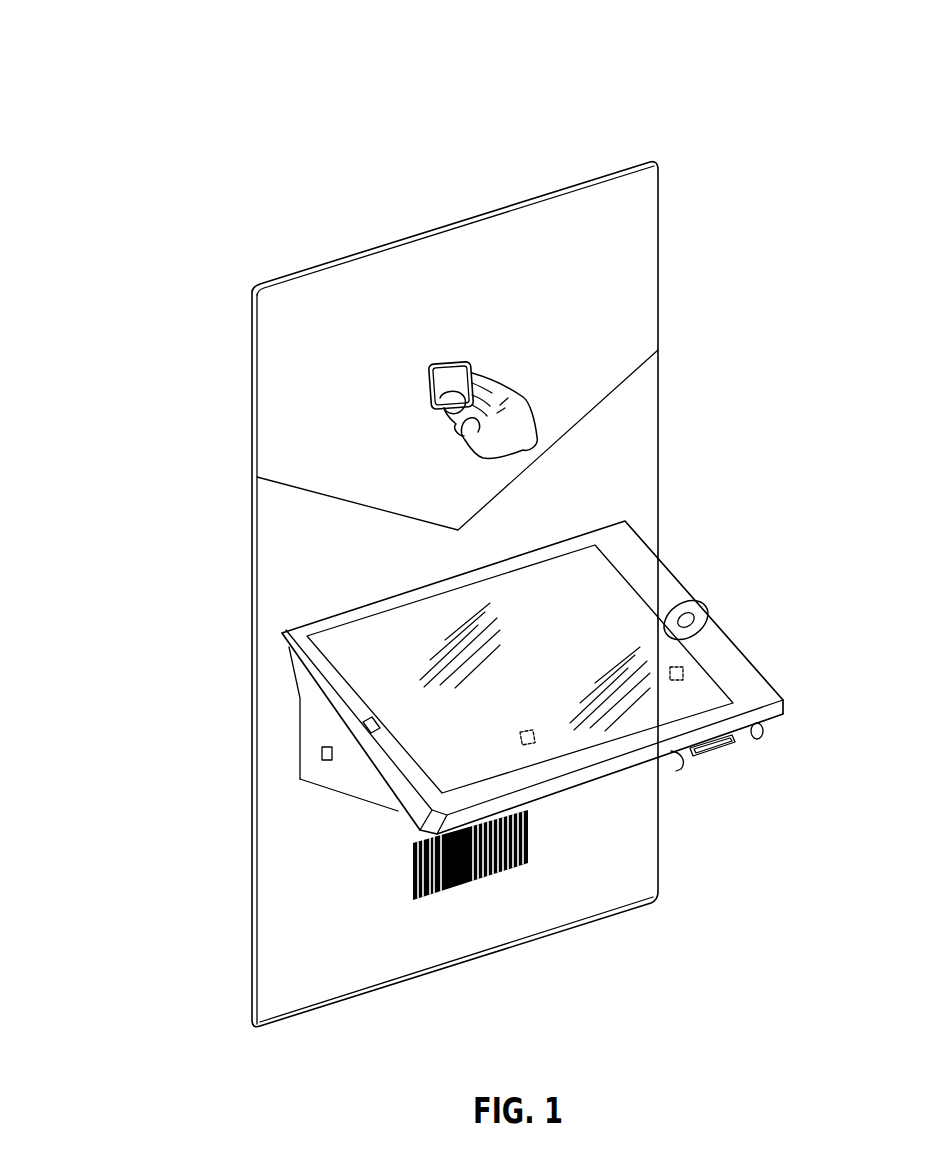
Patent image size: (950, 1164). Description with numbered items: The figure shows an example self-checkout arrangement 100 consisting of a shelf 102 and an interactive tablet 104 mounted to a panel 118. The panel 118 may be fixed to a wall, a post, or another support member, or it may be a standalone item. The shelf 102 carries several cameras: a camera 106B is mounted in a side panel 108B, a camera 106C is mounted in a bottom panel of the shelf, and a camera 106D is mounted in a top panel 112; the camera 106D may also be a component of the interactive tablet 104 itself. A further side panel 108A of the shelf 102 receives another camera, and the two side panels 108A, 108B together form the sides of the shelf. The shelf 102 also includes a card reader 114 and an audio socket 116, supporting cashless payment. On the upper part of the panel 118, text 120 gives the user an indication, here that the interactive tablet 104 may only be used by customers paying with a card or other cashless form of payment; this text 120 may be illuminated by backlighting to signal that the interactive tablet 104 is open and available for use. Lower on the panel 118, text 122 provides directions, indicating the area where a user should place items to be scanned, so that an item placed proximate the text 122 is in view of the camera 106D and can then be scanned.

The self-checkout system 100 is at (140, 63).
The shelf 102 is at (300, 715).
The interactive tablet 104 is at (655, 570).
The camera 106B is at (684, 673).
The camera 106C is at (326, 762).
The camera 106D is at (527, 746).
The side panel 108A is at (315, 773).
The side panel 108B is at (772, 620).
The top panel 112 is at (647, 761).
The card reader 114 is at (710, 758).
The audio socket 116 is at (760, 741).
The panel 118 is at (645, 195).
The text 120 is at (420, 233).
The text 122 is at (528, 927).